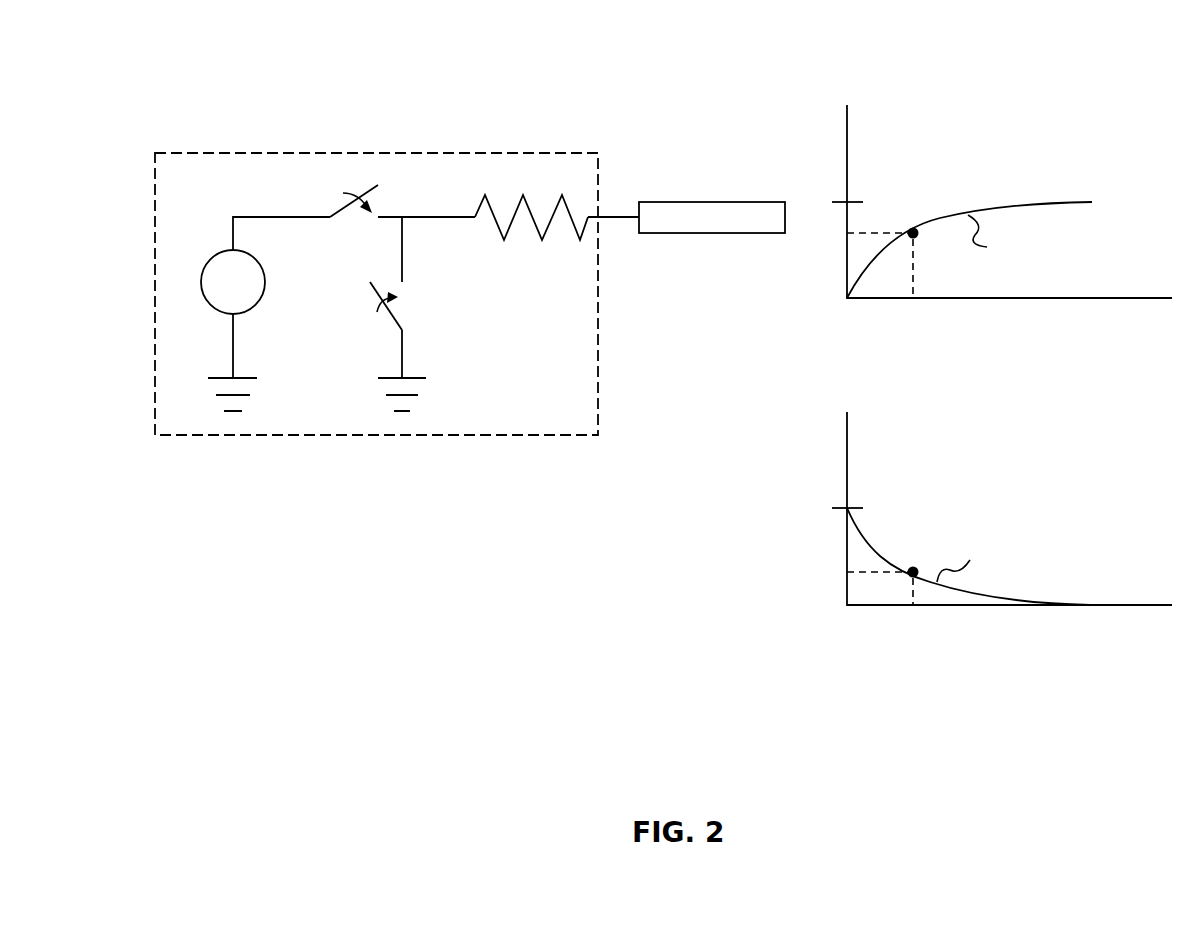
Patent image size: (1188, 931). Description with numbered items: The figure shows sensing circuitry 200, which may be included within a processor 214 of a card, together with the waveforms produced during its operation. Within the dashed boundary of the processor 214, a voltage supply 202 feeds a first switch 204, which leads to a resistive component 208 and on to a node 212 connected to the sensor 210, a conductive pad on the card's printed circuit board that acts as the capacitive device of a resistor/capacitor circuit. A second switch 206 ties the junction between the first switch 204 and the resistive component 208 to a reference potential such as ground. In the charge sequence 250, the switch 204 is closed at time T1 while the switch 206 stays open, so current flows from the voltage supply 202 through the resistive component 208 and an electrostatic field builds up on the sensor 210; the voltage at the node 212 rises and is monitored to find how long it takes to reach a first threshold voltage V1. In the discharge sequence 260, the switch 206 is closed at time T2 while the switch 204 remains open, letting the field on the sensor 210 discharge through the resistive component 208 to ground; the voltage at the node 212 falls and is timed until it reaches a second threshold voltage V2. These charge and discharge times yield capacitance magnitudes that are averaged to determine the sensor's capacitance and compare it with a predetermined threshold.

The sensing circuitry 200 is at (243, 130).
The voltage supply 202 is at (202, 283).
The switch 204 is at (347, 202).
The switch 206 is at (388, 313).
The resistive component 208 is at (537, 228).
The sensor 210 is at (714, 202).
The node 212 is at (612, 217).
The processor 214 is at (413, 153).
The charge sequence 250 is at (1036, 129).
The discharge sequence 260 is at (1078, 460).